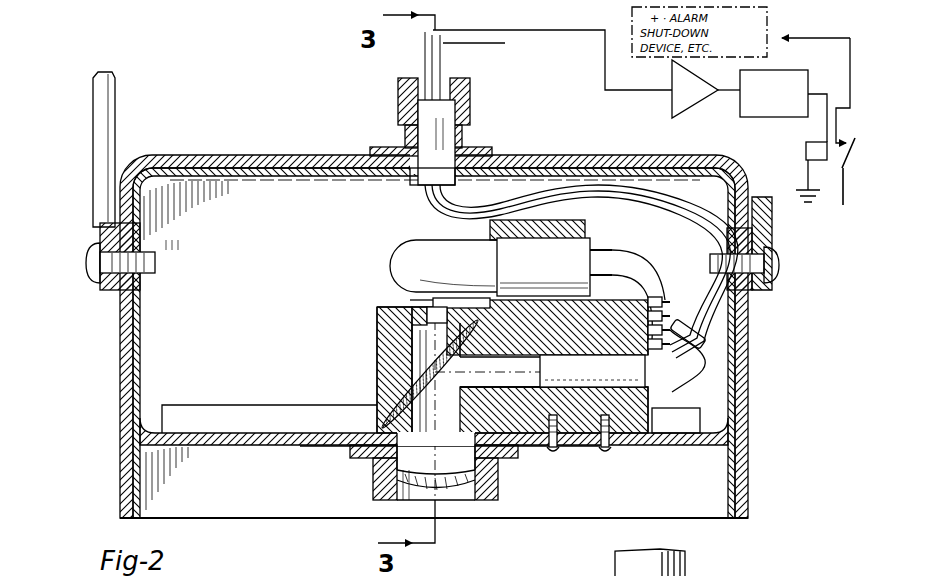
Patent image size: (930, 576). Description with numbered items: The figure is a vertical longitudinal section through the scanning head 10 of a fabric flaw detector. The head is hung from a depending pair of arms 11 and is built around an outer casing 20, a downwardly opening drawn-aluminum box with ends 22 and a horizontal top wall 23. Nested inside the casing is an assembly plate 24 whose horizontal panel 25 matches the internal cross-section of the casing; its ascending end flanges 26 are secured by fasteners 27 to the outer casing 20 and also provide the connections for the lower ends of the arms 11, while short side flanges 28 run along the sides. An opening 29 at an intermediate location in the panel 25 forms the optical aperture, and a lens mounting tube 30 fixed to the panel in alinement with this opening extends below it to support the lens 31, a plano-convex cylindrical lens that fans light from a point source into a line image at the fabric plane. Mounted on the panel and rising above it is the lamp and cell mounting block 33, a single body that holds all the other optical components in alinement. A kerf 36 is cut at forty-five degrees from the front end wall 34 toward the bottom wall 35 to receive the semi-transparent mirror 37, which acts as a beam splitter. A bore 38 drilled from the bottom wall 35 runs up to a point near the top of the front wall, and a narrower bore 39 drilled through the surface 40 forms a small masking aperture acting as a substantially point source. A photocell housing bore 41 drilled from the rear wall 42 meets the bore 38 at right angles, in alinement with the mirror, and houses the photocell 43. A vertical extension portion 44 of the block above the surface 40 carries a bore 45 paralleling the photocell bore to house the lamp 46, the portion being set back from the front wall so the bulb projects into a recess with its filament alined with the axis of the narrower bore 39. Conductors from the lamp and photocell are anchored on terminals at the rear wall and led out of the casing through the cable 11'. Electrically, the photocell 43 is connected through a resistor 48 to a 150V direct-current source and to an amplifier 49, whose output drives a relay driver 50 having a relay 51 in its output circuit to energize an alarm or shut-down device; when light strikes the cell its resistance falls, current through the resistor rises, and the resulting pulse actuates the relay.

The scanning head 10 is at (118, 350).
The arms 11 is at (438, 181).
The cable 11' is at (446, 108).
The outer casing 20 is at (118, 463).
The ends 22 is at (120, 396).
The horizontal top wall 23 is at (216, 155).
The assembly plate 24 is at (296, 447).
The horizontal panel 25 is at (215, 447).
The ascending end flanges 26 is at (140, 366).
The fasteners 27 is at (84, 278).
The short side flanges 28 is at (250, 405).
The opening 29 is at (482, 438).
The lens mounting tube 30 is at (498, 478).
The lens 31 is at (466, 488).
The lamp and cell mounting block 33 is at (376, 348).
The front end wall 34 is at (377, 318).
The bottom wall 35 is at (590, 446).
The kerf 36 is at (395, 396).
The semi-transparent mirror 37 is at (425, 360).
The bore 38 is at (452, 411).
The narrower bore 39 is at (432, 304).
The surface 40 is at (410, 300).
The photocell housing bore 41 is at (495, 366).
The rear wall 42 is at (678, 395).
The photocell 43 is at (596, 358).
The vertical extension portion 44 is at (592, 212).
The bore 45 is at (492, 232).
The lamp 46 is at (420, 248).
The resistor 48 is at (706, 323).
The amplifier 49 is at (672, 80).
The relay driver 50 is at (772, 118).
The relay 51 is at (805, 150).
The 150 volt D.C. source 150V is at (500, 43).